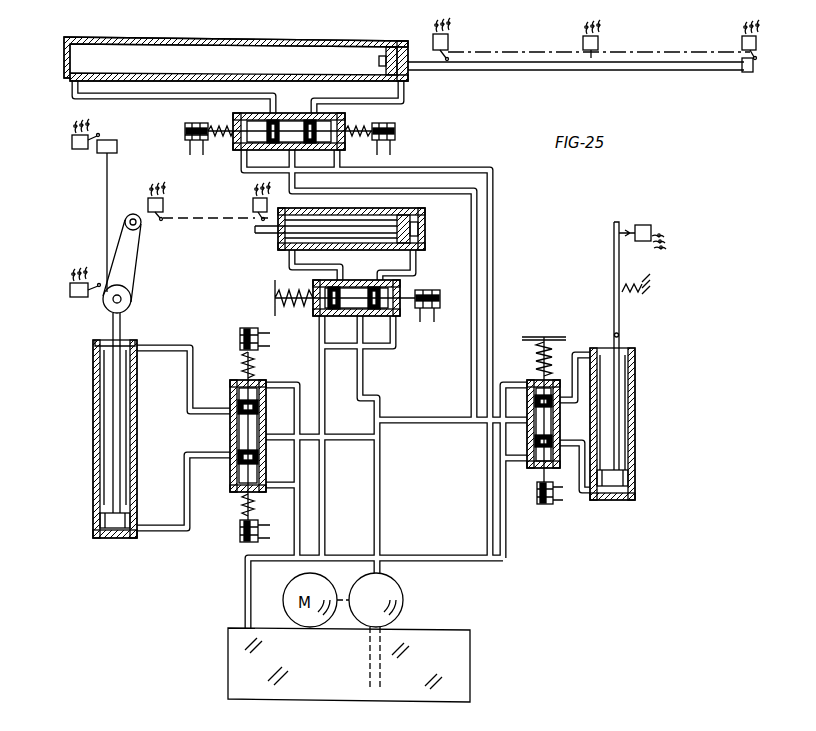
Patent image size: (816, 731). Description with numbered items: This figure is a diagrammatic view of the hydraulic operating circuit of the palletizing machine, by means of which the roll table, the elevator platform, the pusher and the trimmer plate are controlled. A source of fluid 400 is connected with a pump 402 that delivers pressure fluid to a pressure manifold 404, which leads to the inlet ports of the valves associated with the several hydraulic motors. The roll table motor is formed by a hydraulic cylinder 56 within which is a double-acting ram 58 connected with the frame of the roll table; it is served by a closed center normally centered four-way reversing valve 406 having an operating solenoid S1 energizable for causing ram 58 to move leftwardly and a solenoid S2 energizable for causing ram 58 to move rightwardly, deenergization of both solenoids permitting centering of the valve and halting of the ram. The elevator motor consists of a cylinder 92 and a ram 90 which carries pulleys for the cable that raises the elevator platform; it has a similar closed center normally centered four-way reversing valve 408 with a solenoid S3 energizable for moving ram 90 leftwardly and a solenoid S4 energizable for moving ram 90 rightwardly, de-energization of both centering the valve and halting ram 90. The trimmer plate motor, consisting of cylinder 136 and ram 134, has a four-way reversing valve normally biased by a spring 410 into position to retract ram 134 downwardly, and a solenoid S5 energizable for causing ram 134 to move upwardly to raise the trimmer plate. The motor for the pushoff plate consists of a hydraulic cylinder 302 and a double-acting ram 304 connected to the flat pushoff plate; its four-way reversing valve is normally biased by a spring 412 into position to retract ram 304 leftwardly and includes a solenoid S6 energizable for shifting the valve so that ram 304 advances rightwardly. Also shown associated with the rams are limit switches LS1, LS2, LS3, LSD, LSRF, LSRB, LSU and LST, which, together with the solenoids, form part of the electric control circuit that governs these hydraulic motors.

The hydraulic cylinder 56 is at (222, 41).
The double-acting ram 58 is at (455, 71).
The limit switch LS1 is at (742, 42).
The limit switch LS2 is at (600, 42).
The limit switch LS3 is at (450, 42).
The operating solenoid S1 is at (184, 127).
The solenoid S2 is at (395, 127).
The closed center normally centered four-way reversing valve 406 is at (234, 150).
The limit switch down LSD is at (82, 150).
The limit switch LSRF is at (163, 202).
The limit switch LSRB is at (253, 209).
The hydraulic cylinder 302 is at (425, 228).
The double-acting ram 304 is at (266, 236).
The solenoid S6 is at (428, 291).
The spring 412 is at (296, 310).
The solenoid S4 is at (240, 335).
The solenoid S3 is at (238, 538).
The limit switch LSU is at (70, 292).
The closed center normally centered four-way reversing valve 408 is at (230, 432).
The ram 90 is at (113, 396).
The hydraulic cylinder 92 is at (94, 427).
The pressure manifold 404 is at (380, 466).
The spring 410 is at (530, 345).
The solenoid S5 is at (550, 505).
The limit switch LST is at (642, 241).
The ram 134 is at (620, 374).
The cylinder 136 is at (636, 401).
The pump 402 is at (400, 582).
The source of fluid 400 is at (444, 637).